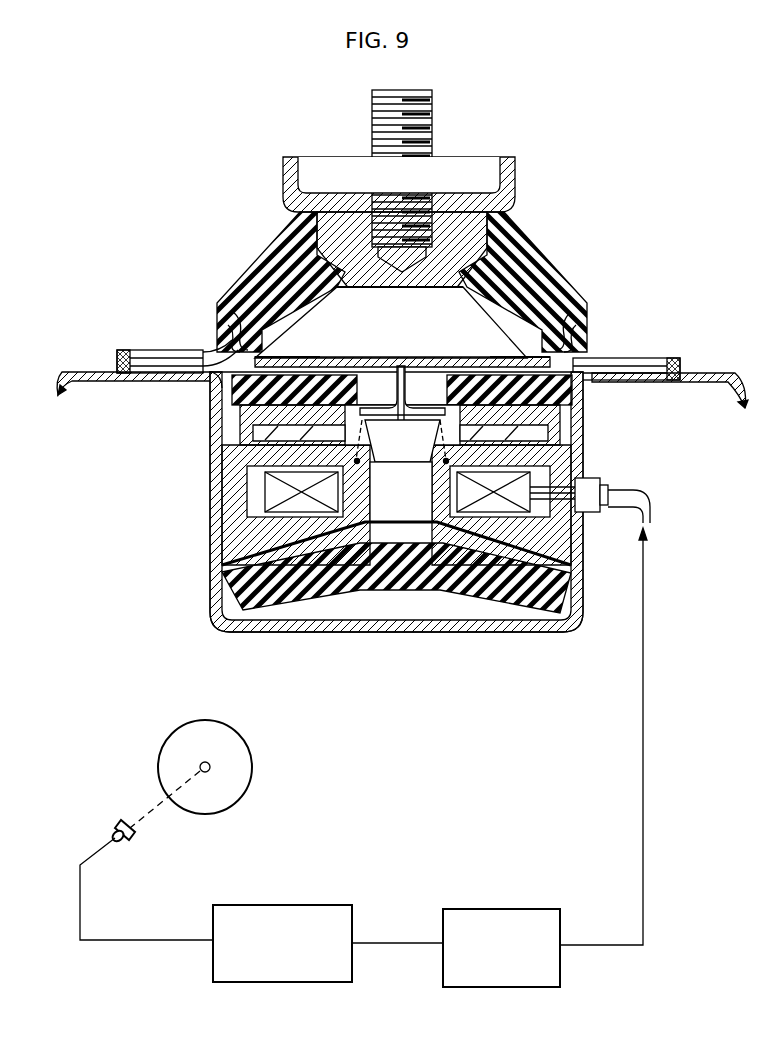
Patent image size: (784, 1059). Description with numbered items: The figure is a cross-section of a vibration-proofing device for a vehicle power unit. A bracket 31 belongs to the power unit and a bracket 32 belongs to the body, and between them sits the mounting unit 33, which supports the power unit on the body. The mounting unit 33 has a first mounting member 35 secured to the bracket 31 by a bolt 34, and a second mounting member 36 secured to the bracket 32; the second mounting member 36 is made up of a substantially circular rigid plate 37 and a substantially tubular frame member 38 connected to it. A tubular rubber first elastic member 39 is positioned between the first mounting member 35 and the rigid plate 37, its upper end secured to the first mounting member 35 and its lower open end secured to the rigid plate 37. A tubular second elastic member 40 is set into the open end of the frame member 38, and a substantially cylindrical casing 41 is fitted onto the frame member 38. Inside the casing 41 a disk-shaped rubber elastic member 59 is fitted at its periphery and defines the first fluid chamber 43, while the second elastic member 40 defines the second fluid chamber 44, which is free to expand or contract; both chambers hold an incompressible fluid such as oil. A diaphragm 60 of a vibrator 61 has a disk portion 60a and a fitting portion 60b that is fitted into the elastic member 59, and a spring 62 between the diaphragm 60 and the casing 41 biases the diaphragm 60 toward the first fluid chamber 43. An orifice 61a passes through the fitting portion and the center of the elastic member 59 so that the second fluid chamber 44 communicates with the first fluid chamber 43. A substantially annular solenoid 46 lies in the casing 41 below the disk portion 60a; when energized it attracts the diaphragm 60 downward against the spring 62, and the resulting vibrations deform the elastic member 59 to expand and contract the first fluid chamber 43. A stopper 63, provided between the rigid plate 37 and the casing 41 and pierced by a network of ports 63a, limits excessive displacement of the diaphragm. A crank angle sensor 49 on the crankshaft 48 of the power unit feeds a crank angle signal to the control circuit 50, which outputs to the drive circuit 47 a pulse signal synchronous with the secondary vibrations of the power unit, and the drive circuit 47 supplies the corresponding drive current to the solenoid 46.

The bracket 31 is at (506, 165).
The bracket 32 is at (64, 377).
The mounting unit 33 is at (566, 238).
The bolt 34 is at (432, 115).
The first mounting member 35 is at (462, 215).
The second mounting member 36 is at (128, 343).
The rigid plate 37 is at (190, 354).
The frame member 38 is at (205, 383).
The first elastic member 39 is at (513, 235).
The second elastic member 40 is at (275, 608).
The casing 41 is at (228, 452).
The first fluid chamber 43 is at (348, 291).
The second fluid chamber 44 is at (362, 532).
The solenoid 46 is at (520, 508).
The drive circuit 47 is at (512, 955).
The crankshaft 48 is at (163, 740).
The crank angle sensor 49 is at (118, 822).
The control circuit 50 is at (298, 955).
The elastic member 59 is at (232, 418).
The diaphragm 60 is at (566, 415).
The disk portion 60a is at (566, 438).
The fitting portion 60b is at (376, 382).
The vibrator 61 is at (246, 488).
The orifice 61a is at (402, 367).
The spring 62 is at (401, 492).
The stopper 63 is at (425, 366).
The ports 63a is at (305, 366).